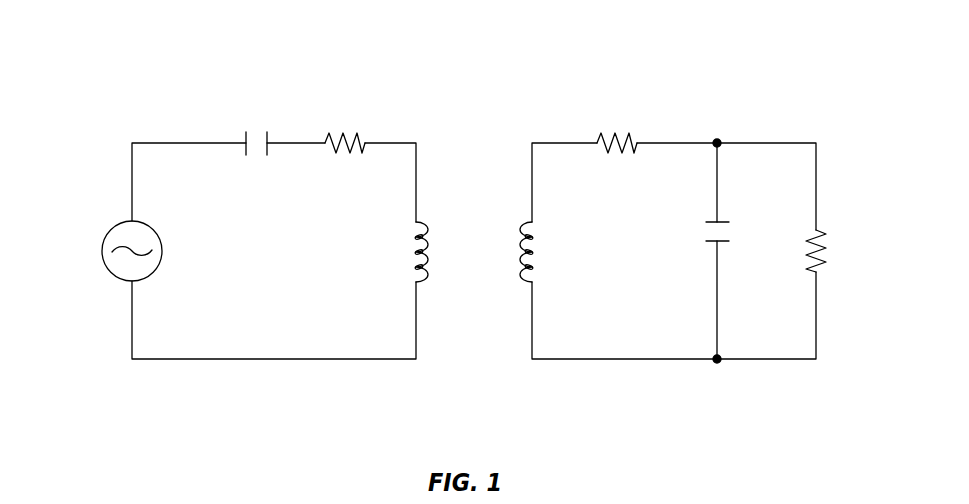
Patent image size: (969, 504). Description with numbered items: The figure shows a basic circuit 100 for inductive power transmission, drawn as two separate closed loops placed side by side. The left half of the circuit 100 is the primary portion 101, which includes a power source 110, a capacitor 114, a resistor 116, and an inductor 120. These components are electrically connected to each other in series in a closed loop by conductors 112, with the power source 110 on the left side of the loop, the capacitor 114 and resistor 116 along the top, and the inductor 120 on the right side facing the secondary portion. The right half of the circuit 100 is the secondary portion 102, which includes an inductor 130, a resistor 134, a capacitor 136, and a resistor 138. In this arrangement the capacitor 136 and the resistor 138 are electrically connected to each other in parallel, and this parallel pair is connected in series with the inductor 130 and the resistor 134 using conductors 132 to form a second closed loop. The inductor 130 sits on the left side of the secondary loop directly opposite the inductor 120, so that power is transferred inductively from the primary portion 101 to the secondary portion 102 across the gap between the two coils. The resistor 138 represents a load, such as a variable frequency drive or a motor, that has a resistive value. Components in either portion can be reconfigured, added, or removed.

The circuit 100 is at (763, 55).
The primary portion 101 is at (390, 388).
The secondary portion 102 is at (592, 390).
The power source 110 is at (102, 250).
The conductors 112 is at (153, 143).
The capacitor 114 is at (243, 142).
The resistor 116 is at (362, 141).
The inductor 120 is at (430, 242).
The inductor 130 is at (517, 260).
The conductors 132 is at (567, 143).
The resistor 134 is at (597, 142).
The capacitor 136 is at (725, 222).
The resistor 138 is at (820, 230).